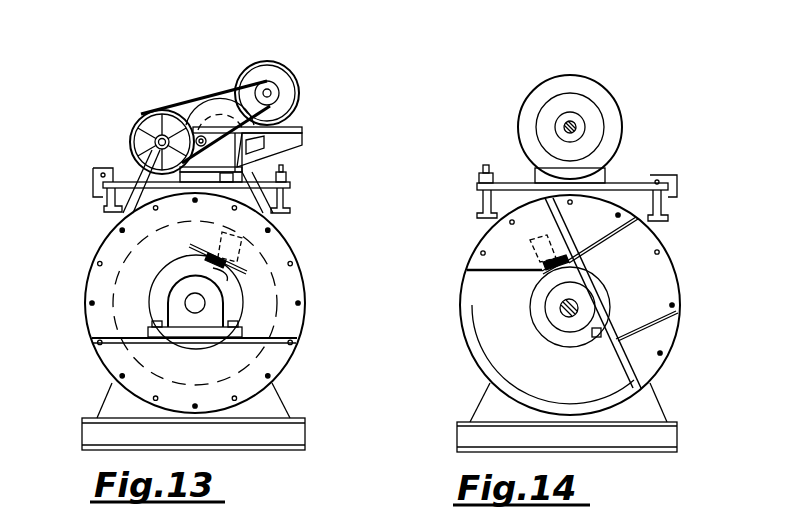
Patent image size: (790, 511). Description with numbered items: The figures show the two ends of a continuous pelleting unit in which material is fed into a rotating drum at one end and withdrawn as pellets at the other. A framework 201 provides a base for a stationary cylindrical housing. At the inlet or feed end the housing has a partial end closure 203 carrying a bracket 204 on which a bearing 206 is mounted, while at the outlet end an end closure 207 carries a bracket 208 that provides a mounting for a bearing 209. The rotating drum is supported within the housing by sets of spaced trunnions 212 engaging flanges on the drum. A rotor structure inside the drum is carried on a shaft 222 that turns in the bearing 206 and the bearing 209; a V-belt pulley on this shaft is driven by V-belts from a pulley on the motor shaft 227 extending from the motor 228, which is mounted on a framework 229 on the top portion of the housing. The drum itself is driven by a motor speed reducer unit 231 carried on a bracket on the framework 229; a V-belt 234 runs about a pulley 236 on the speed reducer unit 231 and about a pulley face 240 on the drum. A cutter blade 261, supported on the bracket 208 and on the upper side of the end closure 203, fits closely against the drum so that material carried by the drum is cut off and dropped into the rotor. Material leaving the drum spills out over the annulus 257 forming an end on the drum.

In FIG. 13, the framework 201 is at (308, 434).
In FIG. 14, the framework 201 is at (680, 437).
In FIG. 13, the partial end closure 203 is at (270, 360).
In FIG. 13, the bracket 204 is at (128, 344).
In FIG. 13, the bearing 206 is at (173, 291).
In FIG. 14, the end closure 207 is at (647, 363).
In FIG. 14, the bracket 208 is at (594, 245).
In FIG. 14, the bearing 209 is at (545, 320).
In FIG. 13, the trunnions 212 is at (143, 176).
In FIG. 13, the shaft 222 is at (186, 305).
In FIG. 14, the motor shaft 227 is at (577, 125).
In FIG. 14, the motor 228 is at (600, 80).
In FIG. 13, the framework 229 is at (298, 191).
In FIG. 14, the framework 229 is at (640, 173).
In FIG. 13, the motor speed reducer unit 231 is at (287, 67).
In FIG. 13, the V-belt 234 is at (262, 240).
In FIG. 13, the pulley 236 is at (267, 143).
In FIG. 13, the pulley face 240 is at (155, 230).
In FIG. 14, the annulus 257 is at (517, 358).
In FIG. 13, the cutter blade 261 is at (224, 270).
In FIG. 14, the cutter blade 261 is at (536, 237).